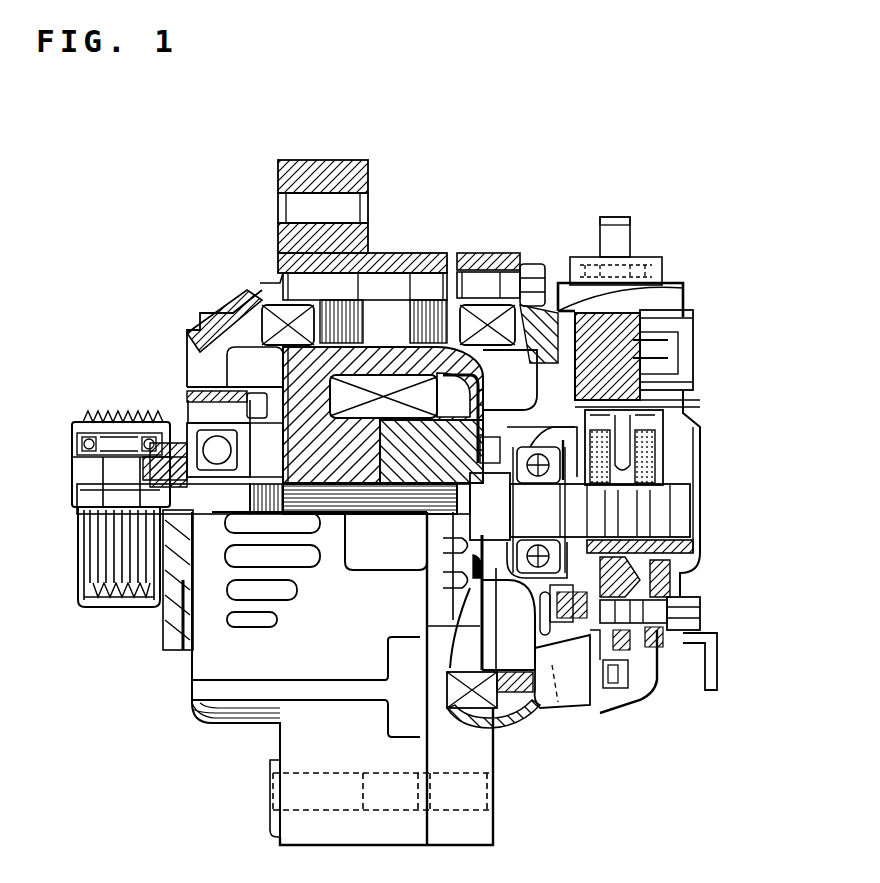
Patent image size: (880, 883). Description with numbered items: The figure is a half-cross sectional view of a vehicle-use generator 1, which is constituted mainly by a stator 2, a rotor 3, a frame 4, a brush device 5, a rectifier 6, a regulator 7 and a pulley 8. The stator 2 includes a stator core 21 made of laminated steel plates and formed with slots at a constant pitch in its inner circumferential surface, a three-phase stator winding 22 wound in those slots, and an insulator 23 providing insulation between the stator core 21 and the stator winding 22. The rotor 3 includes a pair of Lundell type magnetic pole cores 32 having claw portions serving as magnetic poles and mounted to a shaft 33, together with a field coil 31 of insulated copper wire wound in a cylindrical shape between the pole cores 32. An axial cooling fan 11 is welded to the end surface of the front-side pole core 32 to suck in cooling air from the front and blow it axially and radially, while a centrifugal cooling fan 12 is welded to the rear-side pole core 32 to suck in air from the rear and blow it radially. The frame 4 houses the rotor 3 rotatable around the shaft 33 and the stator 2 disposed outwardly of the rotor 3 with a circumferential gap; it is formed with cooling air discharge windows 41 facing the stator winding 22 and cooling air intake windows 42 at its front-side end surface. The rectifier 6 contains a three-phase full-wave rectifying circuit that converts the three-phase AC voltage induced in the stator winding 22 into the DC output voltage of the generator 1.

The vehicle-use generator 1 is at (648, 198).
The stator 2 is at (375, 322).
The stator core 21 is at (430, 292).
The three-phase stator winding 22 is at (228, 372).
The insulator 23 is at (520, 305).
The rotor 3 is at (264, 360).
The field coil 31 is at (366, 380).
The Lundell type magnetic pole core 32 is at (508, 367).
The shaft 33 is at (167, 500).
The frame 4 is at (297, 745).
The cooling air discharge windows 41 is at (195, 612).
The cooling air intake windows 42 is at (197, 370).
The brush device 5 is at (662, 423).
The rectifier 6 is at (660, 643).
The regulator 7 is at (687, 337).
The pulley 8 is at (78, 522).
The axial cooling fan 11 is at (247, 315).
The centrifugal cooling fan 12 is at (683, 290).